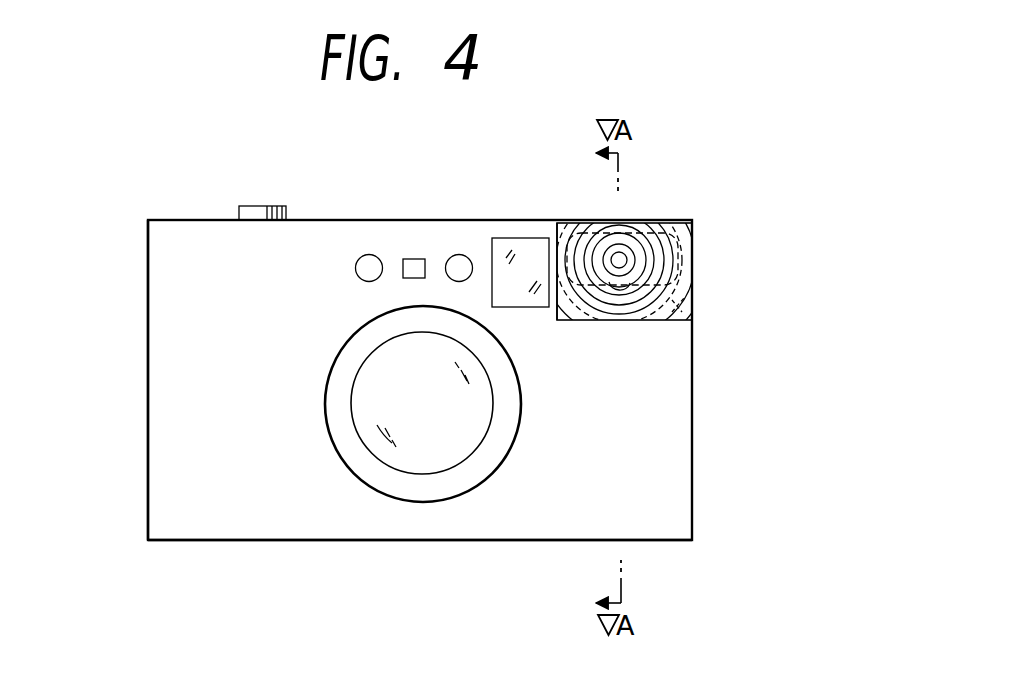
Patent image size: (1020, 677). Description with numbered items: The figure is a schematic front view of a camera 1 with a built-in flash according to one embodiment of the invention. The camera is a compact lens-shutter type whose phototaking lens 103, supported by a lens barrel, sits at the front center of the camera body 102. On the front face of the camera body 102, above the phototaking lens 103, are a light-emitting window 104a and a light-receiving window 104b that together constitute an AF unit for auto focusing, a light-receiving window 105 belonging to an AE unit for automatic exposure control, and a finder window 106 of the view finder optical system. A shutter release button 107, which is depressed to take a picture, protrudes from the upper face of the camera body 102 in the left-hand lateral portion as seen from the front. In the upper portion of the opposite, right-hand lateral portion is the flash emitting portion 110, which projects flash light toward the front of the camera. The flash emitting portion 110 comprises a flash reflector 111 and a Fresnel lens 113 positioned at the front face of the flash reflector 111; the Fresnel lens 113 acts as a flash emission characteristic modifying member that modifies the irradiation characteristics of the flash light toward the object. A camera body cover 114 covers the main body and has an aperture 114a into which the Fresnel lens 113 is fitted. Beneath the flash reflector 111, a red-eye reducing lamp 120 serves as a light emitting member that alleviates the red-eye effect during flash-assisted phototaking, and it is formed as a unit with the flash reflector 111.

The camera 1 is at (676, 150).
The camera body 102 is at (700, 380).
The phototaking lens 103 is at (428, 453).
The light-emitting window 104a is at (367, 257).
The light-receiving window 104b is at (457, 255).
The light-receiving window of AE unit 105 is at (414, 259).
The finder window 106 is at (497, 238).
The shutter release button 107 is at (267, 207).
The flash emitting portion 110 is at (648, 256).
The flash reflector 111 is at (641, 230).
The Fresnel lens 113 is at (572, 240).
The camera body cover 114 is at (675, 448).
The aperture 114a is at (562, 240).
The red-eye reducing lamp 120 is at (650, 313).